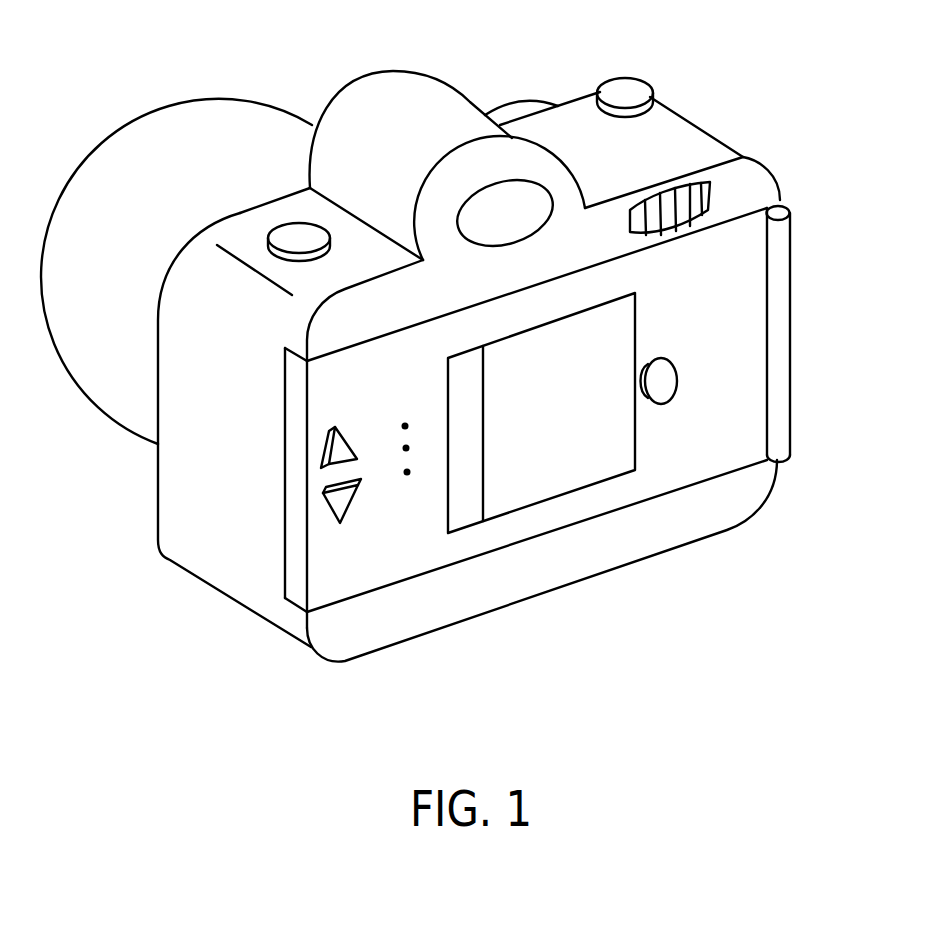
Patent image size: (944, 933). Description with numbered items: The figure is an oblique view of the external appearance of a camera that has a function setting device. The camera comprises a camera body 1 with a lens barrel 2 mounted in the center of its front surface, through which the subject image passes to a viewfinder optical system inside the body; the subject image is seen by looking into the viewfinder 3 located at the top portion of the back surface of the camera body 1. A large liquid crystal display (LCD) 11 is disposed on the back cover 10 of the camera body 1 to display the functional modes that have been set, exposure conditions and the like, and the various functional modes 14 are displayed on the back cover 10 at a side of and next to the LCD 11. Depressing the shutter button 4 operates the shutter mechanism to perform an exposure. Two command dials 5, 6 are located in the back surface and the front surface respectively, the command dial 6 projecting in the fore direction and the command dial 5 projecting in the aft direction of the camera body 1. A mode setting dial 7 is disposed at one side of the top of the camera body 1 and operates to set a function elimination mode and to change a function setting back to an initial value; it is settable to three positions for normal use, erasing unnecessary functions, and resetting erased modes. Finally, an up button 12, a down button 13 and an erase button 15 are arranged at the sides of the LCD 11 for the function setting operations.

The camera body 1 is at (240, 587).
The lens barrel 2 is at (208, 116).
The viewfinder 3 is at (468, 223).
The shutter button 4 is at (628, 90).
The command dial 5 is at (678, 226).
The command dial 6 is at (518, 108).
The mode setting dial 7 is at (287, 235).
The back cover 10 is at (742, 420).
The liquid crystal display (LCD) 11 is at (565, 478).
The up button 12 is at (322, 446).
The down button 13 is at (322, 510).
The functional modes 14 is at (388, 570).
The erase button 15 is at (672, 381).